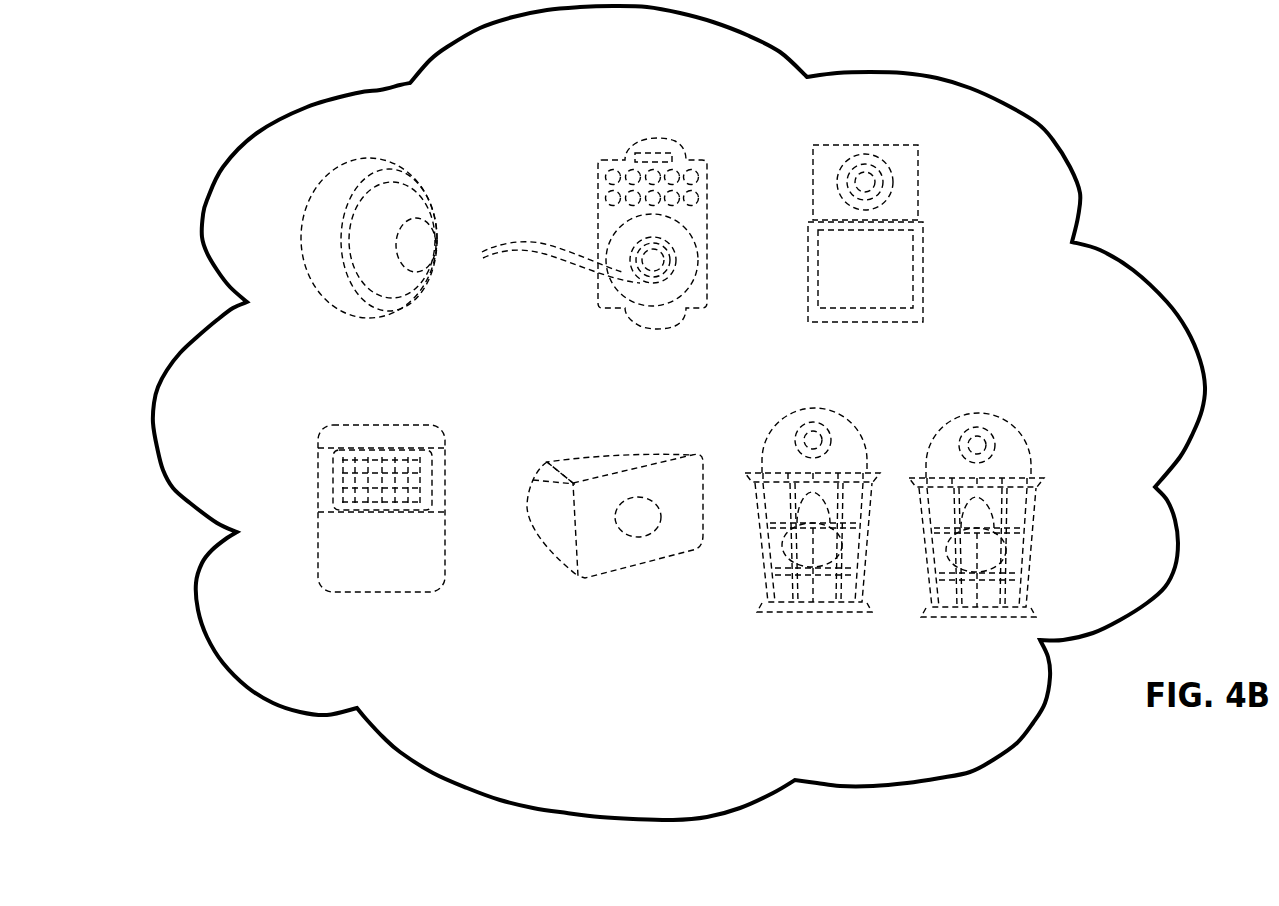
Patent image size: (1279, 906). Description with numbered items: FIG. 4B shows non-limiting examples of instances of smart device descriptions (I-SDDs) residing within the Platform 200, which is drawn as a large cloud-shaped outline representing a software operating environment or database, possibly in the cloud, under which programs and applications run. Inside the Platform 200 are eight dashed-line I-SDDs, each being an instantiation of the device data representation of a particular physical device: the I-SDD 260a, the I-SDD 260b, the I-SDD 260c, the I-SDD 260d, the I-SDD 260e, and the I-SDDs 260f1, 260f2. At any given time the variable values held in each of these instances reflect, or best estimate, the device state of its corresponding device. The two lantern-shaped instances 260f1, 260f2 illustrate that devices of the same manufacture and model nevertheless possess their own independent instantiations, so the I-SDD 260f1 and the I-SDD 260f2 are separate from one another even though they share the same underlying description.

The Platform 200 is at (1026, 111).
The I-SDD 260a is at (405, 164).
The I-SDD 260b is at (612, 158).
The I-SDD 260c is at (817, 152).
The I-SDD 260d is at (373, 593).
The I-SDD 260e is at (585, 577).
The I-SDD 260f1 is at (842, 617).
The I-SDD 260f2 is at (970, 623).